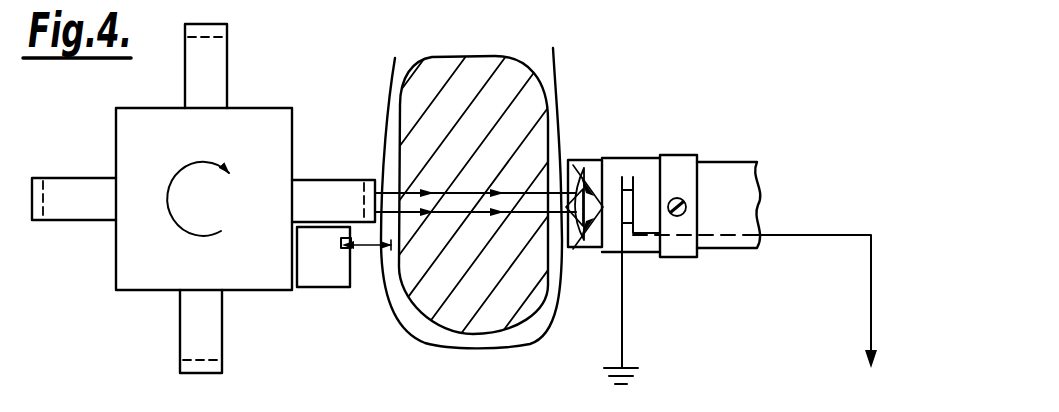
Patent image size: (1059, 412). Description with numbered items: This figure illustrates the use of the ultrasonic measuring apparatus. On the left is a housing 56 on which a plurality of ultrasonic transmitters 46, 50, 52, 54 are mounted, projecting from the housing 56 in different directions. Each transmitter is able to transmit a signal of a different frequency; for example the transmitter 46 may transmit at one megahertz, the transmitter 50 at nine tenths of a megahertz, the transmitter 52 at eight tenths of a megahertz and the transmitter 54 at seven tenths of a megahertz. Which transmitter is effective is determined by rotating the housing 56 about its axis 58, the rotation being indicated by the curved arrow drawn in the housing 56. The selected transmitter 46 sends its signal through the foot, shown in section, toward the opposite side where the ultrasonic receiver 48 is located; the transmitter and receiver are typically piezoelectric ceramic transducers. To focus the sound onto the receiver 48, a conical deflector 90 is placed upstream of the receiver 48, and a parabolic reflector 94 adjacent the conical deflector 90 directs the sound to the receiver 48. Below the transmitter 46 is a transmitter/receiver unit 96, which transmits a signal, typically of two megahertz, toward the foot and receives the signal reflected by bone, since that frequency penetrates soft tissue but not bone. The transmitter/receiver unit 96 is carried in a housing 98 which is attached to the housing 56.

The ultrasonic transmitter 46 is at (338, 192).
The ultrasonic receiver 48 is at (627, 192).
The transmitter 50 is at (216, 62).
The transmitter 52 is at (78, 188).
The transmitter 54 is at (187, 333).
The housing 56 is at (155, 122).
The axis 58 is at (203, 200).
The conical deflector 90 is at (570, 248).
The parabolic reflector 94 is at (575, 160).
The transmitter/receiver unit 96 is at (345, 247).
The housing 98 is at (315, 286).